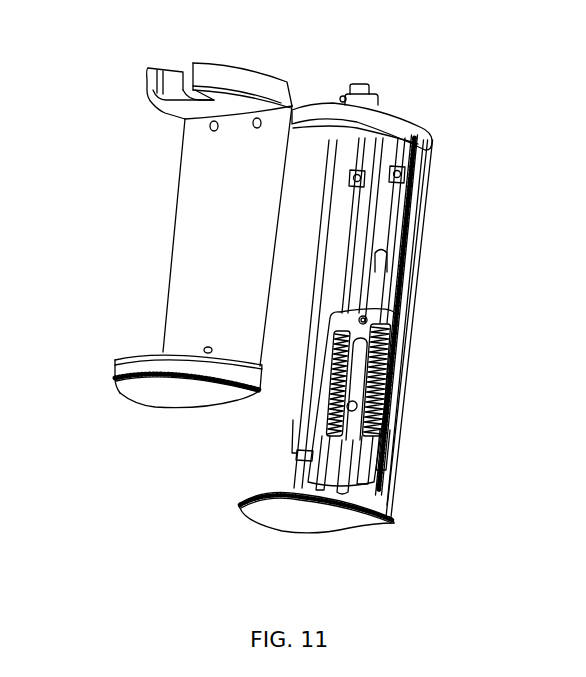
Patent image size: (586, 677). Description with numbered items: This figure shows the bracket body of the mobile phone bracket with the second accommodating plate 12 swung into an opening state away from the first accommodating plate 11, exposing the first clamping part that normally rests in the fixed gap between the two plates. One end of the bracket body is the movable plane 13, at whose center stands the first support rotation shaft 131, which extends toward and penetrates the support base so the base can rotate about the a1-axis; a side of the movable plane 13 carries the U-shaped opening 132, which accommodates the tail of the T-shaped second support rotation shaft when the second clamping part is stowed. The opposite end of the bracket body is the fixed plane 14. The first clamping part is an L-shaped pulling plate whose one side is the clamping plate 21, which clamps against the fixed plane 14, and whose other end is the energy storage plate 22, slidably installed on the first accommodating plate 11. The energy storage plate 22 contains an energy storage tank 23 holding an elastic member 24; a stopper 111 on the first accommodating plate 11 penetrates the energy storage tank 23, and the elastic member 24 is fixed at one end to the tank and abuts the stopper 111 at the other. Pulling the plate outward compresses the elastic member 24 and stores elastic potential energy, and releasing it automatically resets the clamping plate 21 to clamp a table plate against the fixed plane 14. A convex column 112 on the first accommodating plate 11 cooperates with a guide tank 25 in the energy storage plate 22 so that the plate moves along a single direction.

The first accommodating plate 11 is at (430, 155).
The stopper 111 is at (390, 444).
The convex column 112 is at (395, 388).
The second accommodating plate 12 is at (190, 213).
The movable plane 13 is at (406, 112).
The first support rotation shaft 131 is at (363, 84).
The U-shaped opening 132 is at (177, 82).
The fixed plane 14 is at (165, 391).
The clamping plate 21 is at (300, 510).
The energy storage plate 22 is at (383, 318).
The energy storage tank 23 is at (367, 485).
The elastic member 24 is at (390, 343).
The guide tank 25 is at (352, 472).